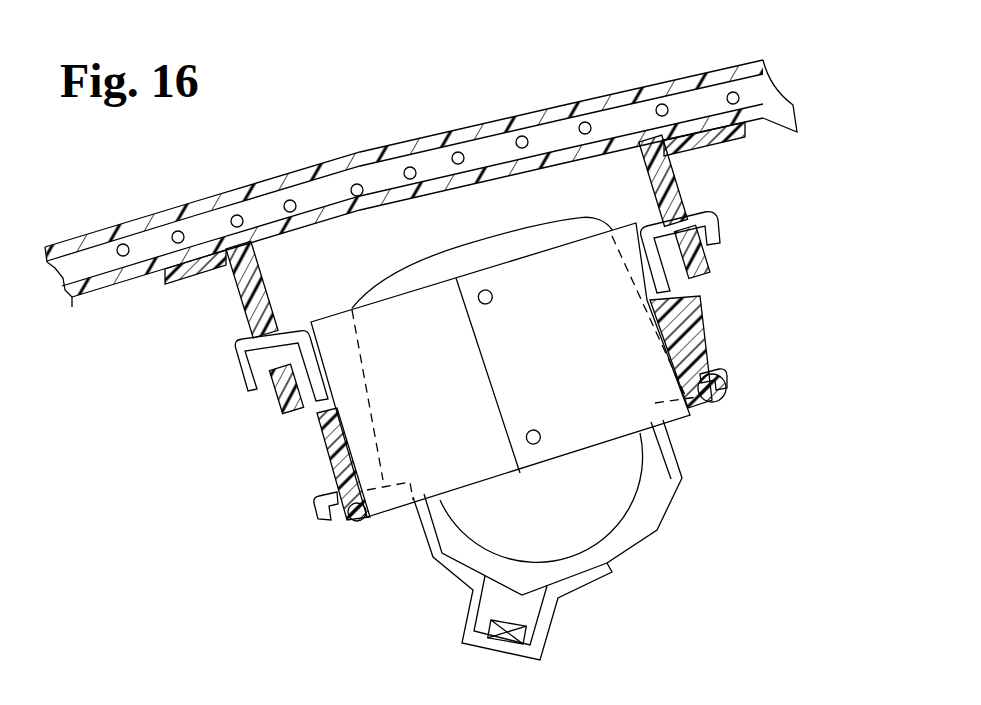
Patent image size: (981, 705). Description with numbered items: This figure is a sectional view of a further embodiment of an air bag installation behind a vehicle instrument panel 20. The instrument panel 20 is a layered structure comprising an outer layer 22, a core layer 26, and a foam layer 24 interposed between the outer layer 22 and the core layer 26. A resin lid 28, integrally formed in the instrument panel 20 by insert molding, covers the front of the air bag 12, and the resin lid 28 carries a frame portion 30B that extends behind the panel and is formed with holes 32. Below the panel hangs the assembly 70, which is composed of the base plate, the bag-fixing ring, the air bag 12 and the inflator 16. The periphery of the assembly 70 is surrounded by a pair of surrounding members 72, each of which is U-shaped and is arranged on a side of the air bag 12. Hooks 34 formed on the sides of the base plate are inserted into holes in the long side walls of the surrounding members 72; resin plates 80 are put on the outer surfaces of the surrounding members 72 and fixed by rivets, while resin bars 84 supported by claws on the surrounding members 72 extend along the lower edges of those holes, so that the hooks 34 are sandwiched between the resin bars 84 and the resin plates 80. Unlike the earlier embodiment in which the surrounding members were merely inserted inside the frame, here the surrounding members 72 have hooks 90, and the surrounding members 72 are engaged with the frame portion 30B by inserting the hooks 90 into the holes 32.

The instrument panel 20 is at (745, 42).
The outer layer 22 is at (762, 74).
The foam layer 24 is at (697, 98).
The core layer 26 is at (668, 126).
The resin lid 28 is at (226, 282).
The frame portion 30B is at (668, 176).
The holes 32 is at (272, 382).
The hooks 90 is at (236, 386).
The resin plates 80 is at (322, 462).
The hooks 34 is at (313, 514).
The resin bars 84 is at (356, 521).
The air bag 12 is at (396, 274).
The surrounding member 72 is at (513, 284).
The assembly 70 is at (414, 542).
The inflator 16 is at (588, 516).